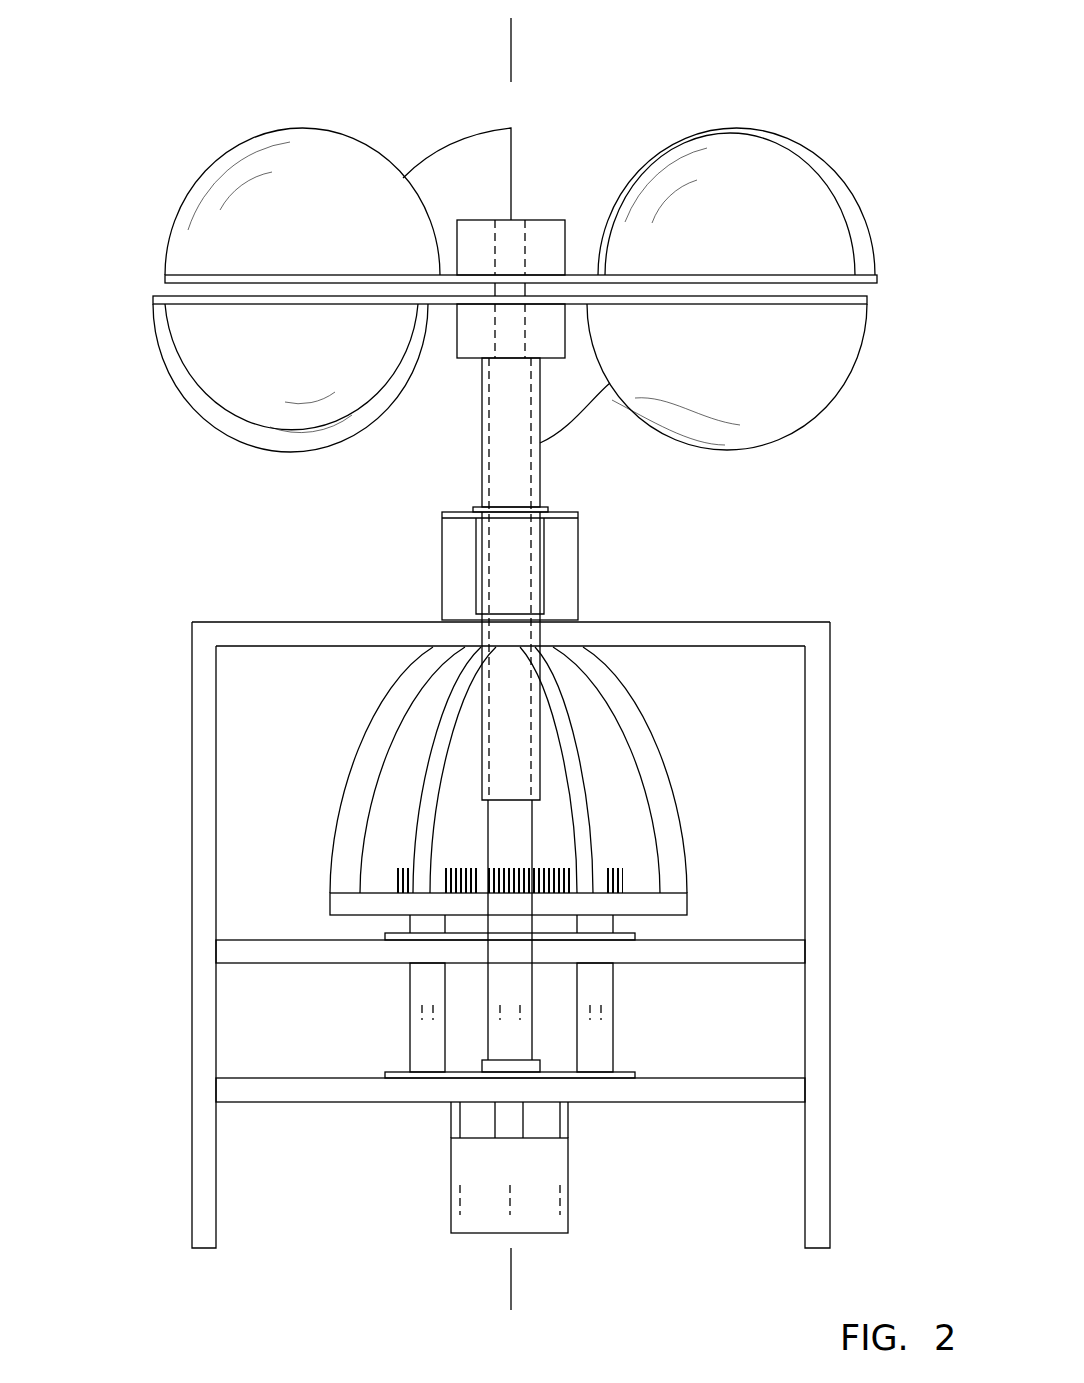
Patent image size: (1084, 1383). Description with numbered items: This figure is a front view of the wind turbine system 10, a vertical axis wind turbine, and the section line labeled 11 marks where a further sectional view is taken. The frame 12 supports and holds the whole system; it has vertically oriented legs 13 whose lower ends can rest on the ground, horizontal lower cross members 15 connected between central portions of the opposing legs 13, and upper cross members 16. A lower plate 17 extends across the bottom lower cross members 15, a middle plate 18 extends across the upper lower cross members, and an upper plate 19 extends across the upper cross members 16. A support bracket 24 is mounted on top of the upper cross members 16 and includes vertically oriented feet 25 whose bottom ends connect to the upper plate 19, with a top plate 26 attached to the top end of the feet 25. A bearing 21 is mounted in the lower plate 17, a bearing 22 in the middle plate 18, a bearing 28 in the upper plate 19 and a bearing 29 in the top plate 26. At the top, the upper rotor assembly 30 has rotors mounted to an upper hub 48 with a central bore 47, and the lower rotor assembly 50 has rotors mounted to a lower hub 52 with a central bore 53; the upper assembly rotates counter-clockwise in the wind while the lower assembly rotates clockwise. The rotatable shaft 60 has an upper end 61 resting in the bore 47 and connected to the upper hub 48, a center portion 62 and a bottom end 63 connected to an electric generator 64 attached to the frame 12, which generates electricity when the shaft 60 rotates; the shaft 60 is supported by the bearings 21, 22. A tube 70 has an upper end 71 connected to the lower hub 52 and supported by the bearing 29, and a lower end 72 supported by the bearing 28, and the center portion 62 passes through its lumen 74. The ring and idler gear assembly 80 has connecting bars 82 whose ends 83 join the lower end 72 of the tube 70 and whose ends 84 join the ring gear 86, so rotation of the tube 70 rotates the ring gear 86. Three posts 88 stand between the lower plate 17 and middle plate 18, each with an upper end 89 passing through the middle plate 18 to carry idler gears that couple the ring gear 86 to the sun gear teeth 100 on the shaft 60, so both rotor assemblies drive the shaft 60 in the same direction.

The wind turbine system 10 is at (162, 75).
The section line 11 is at (494, 48).
The frame 12 is at (492, 902).
The legs 13 is at (192, 1163).
The lower cross members 15 is at (762, 955).
The upper cross members 16 is at (252, 622).
The lower plate 17 is at (633, 1070).
The middle plate 18 is at (633, 933).
The upper plate 19 is at (560, 615).
The bearing 21 is at (486, 1063).
The bearing 22 is at (480, 918).
The support bracket 24 is at (422, 565).
The feet 25 is at (565, 585).
The top plate 26 is at (458, 512).
The bearing 28 is at (535, 580).
The bearing 29 is at (522, 493).
The upper rotor assembly 30 is at (173, 175).
The bore 47 is at (523, 247).
The upper hub 48 is at (547, 219).
The lower rotor assembly 50 is at (150, 383).
The lower hub 52 is at (450, 350).
The bore 53 is at (490, 328).
The rotatable shaft 60 is at (517, 1115).
The upper end 61 is at (520, 228).
The center portion 62 is at (540, 545).
The bottom end 63 is at (497, 1123).
The electric generator 64 is at (451, 1197).
The tube 70 is at (540, 460).
The upper end 71 is at (540, 372).
The lower end 72 is at (487, 600).
The lumen 74 is at (565, 582).
The ring and idler gear assembly 80 is at (622, 781).
The connecting bars 82 is at (652, 738).
The ends 83 is at (595, 655).
The ends 84 is at (688, 878).
The ring gear 86 is at (330, 905).
The posts 88 is at (410, 1022).
The upper end 89 is at (390, 935).
The teeth 100 is at (395, 878).